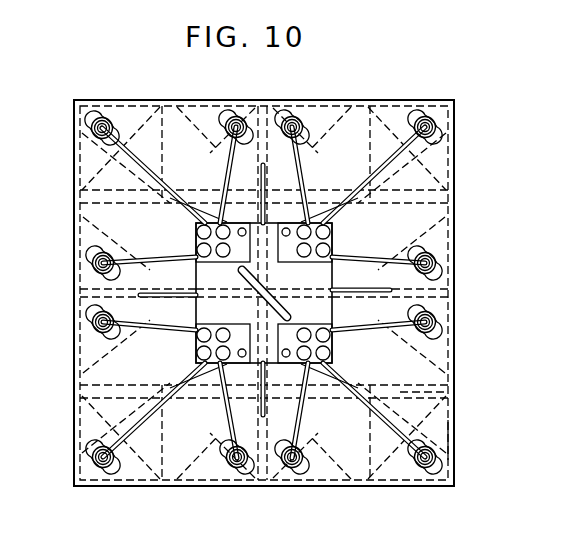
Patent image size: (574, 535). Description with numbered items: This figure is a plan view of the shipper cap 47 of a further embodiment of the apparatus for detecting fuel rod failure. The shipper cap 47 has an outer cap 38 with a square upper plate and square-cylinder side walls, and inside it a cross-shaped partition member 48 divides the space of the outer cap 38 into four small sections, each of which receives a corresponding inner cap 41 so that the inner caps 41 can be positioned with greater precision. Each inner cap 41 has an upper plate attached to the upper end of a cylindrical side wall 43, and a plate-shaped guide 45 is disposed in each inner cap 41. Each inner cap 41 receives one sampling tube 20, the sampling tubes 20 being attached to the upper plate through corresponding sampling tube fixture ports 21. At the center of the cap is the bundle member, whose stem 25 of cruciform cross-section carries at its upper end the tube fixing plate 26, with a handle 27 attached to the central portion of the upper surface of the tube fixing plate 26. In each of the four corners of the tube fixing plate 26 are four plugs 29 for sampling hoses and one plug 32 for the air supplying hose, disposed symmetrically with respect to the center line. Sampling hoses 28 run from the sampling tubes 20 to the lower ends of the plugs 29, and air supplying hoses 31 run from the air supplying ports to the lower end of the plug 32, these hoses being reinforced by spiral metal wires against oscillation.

The sampling tube 20 is at (103, 467).
The sampling tube fixture port 21 is at (85, 455).
The stem 25 is at (270, 407).
The tube fixing plate 26 is at (333, 352).
The handle 27 is at (288, 314).
The sampling hose 28 is at (133, 165).
The plug for sampling hoses 29 is at (188, 345).
The air supplying hose 31 is at (192, 205).
The plug for the air supplying hose 32 is at (250, 410).
The outer cap 38 is at (78, 150).
The inner cap 41 is at (80, 200).
The cylindrical side wall 43 is at (448, 392).
The plate-shaped guide 45 is at (455, 437).
The shipper cap 47 is at (455, 197).
The cross-shaped partition member 48 is at (80, 298).